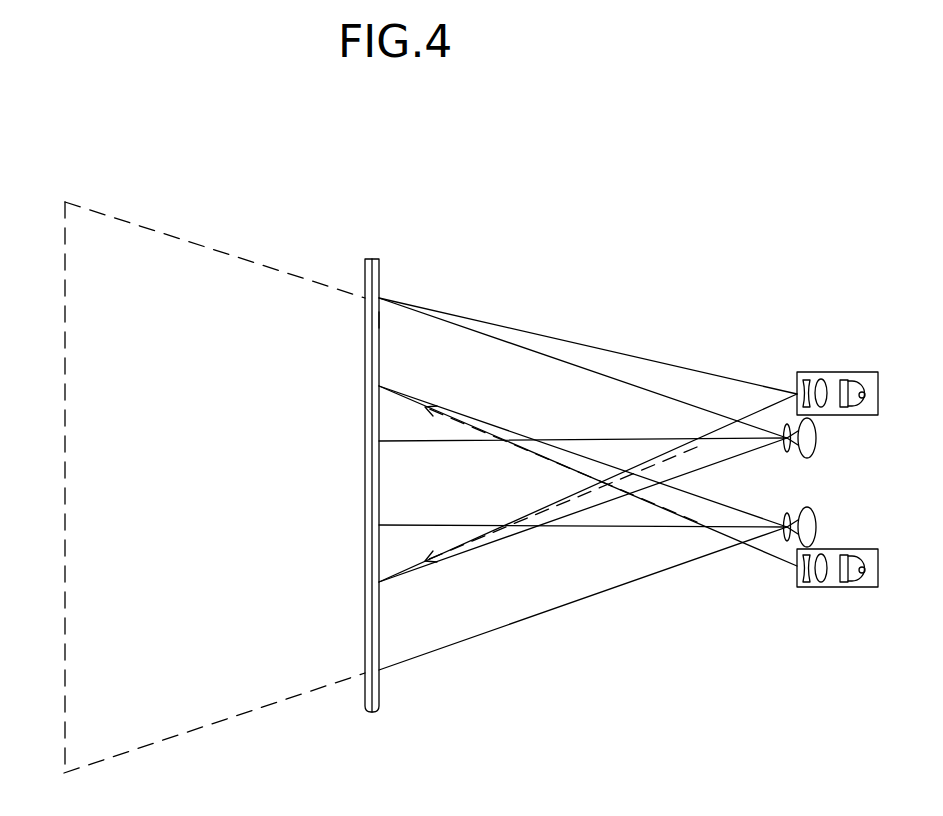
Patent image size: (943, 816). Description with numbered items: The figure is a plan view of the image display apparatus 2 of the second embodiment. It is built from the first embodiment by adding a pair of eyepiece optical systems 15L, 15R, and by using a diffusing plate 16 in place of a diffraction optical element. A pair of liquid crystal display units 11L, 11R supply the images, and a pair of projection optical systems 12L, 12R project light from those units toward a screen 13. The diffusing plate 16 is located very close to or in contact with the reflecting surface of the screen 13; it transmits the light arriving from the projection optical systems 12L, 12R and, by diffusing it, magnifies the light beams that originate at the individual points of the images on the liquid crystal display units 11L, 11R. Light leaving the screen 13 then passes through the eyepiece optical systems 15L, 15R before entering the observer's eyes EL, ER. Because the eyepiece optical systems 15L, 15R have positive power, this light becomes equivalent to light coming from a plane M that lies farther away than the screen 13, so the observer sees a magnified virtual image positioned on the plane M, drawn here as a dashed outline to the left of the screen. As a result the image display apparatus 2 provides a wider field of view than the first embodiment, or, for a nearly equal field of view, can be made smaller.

The image display apparatus 2 is at (572, 705).
The screen 13 is at (365, 500).
The diffusing plate 16 is at (381, 320).
The liquid crystal display unit 11R is at (852, 372).
The projection optical system 12R is at (815, 372).
The liquid crystal display unit 11L is at (852, 588).
The projection optical system 12L is at (812, 588).
The observer's eye ER is at (816, 436).
The observer's eye EL is at (816, 531).
The eyepiece optical system 15R is at (791, 452).
The eyepiece optical system 15L is at (791, 512).
The plane M is at (63, 700).